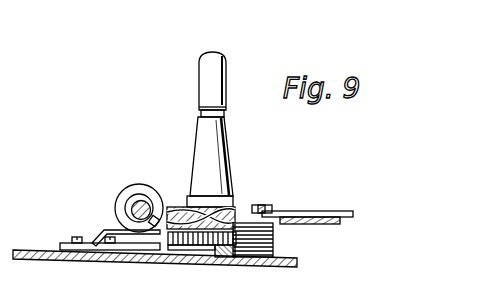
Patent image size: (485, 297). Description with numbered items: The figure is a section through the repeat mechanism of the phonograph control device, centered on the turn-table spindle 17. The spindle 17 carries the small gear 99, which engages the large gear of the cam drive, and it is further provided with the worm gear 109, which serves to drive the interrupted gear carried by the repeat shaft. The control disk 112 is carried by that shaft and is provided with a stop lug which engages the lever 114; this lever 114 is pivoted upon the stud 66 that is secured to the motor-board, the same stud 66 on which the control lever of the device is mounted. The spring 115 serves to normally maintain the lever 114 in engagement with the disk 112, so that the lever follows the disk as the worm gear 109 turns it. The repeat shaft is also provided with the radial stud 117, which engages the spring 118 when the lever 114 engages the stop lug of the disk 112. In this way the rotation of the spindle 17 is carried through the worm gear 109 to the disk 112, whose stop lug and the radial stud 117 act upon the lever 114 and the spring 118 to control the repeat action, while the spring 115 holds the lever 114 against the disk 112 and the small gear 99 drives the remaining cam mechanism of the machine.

The spindle 17 is at (210, 52).
The lever 114 is at (183, 200).
The worm gear 109 is at (231, 200).
The radial stud 117 is at (159, 212).
The control disk 112 is at (133, 183).
The spring 118 is at (108, 230).
The spring 115 is at (274, 238).
The stud 66 is at (268, 208).
The small gear 99 is at (184, 256).